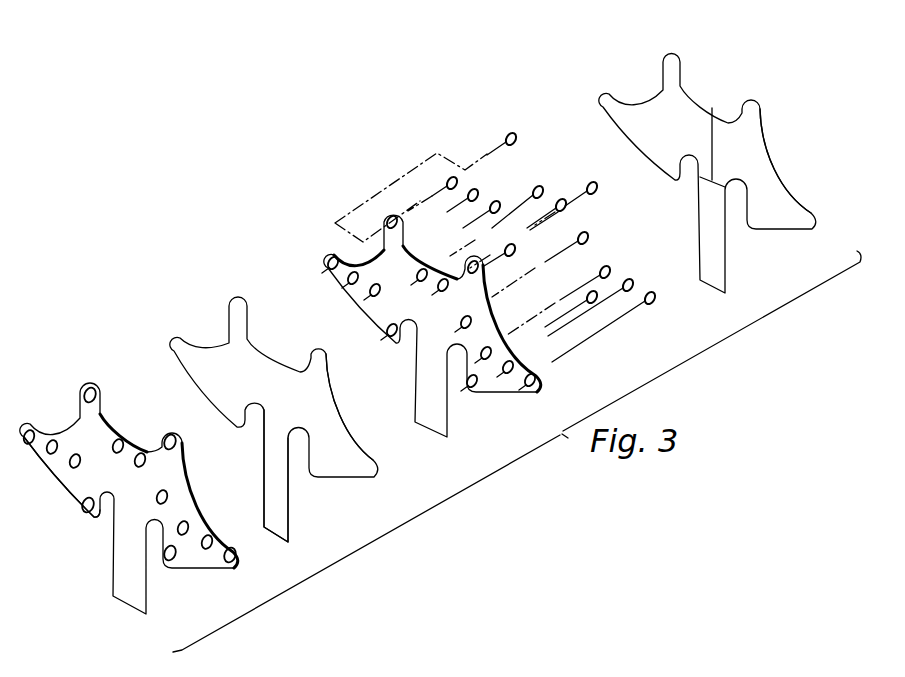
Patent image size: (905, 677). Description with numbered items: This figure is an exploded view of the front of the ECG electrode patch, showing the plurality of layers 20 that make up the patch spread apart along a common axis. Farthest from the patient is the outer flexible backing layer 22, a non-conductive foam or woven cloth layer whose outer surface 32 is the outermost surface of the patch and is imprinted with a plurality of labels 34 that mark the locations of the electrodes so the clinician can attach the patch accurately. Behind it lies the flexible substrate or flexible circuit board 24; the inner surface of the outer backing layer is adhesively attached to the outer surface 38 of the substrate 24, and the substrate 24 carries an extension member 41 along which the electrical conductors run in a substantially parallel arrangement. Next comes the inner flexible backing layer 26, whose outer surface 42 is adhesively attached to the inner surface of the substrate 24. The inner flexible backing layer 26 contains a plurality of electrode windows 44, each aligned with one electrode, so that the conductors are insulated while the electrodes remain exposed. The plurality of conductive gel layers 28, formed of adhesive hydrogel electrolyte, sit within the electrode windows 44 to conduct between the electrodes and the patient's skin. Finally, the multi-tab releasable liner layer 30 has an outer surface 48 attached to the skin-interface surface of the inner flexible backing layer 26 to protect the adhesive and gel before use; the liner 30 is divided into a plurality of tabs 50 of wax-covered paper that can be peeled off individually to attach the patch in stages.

The plurality of layers 20 is at (488, 428).
The outer flexible backing layer 22 is at (157, 498).
The flexible substrate or flexible circuit board 24 is at (303, 419).
The inner flexible backing layer 26 is at (442, 325).
The plurality of conductive gel layers 28 is at (652, 304).
The multi-tab releasable liner layer 30 is at (740, 174).
The outer surface 32 is at (72, 485).
The plurality of labels 34 is at (140, 453).
The outer surface 38 is at (305, 395).
The extension member 41 is at (280, 500).
The outer surface 42 is at (373, 266).
The plurality of electrode windows 44 is at (443, 286).
The outer surface 48 is at (753, 167).
The plurality of tabs 50 is at (710, 203).